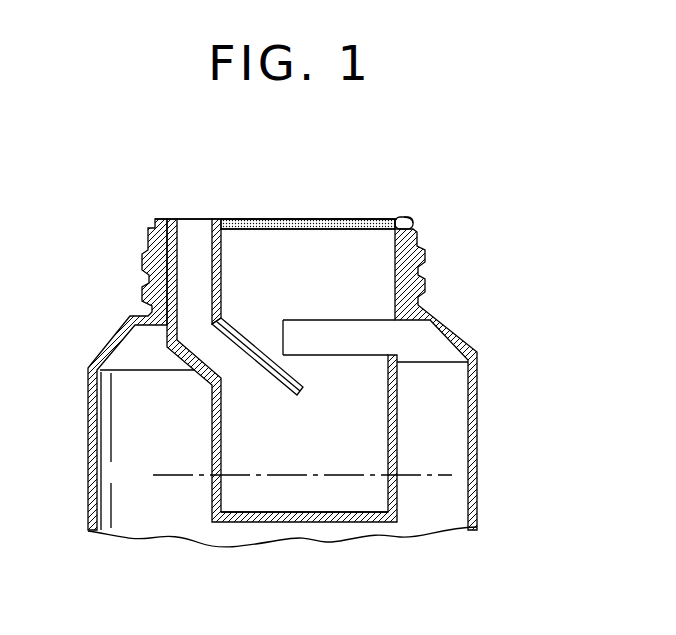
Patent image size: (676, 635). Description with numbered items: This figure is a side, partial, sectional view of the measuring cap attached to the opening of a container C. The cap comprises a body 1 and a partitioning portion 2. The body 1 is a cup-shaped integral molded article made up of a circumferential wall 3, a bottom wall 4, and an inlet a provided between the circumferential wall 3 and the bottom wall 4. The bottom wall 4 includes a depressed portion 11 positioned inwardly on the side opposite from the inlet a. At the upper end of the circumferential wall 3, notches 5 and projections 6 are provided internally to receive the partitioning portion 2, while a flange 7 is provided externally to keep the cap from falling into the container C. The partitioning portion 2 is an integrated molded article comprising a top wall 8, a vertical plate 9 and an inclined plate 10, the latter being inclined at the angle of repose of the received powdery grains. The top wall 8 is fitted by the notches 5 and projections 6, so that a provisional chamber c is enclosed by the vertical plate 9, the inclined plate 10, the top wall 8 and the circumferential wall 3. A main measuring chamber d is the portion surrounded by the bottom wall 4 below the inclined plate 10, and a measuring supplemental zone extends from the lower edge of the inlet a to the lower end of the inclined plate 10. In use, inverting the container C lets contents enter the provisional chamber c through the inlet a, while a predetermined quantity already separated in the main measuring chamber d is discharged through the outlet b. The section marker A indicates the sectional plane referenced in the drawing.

The body 1 is at (142, 222).
The partitioning portion 2 is at (266, 206).
The circumferential wall 3 is at (407, 305).
The bottom wall 4 is at (397, 498).
The notches 5 is at (414, 225).
The projections 6 is at (390, 217).
The flange 7 is at (412, 216).
The top wall 8 is at (332, 217).
The vertical plate 9 is at (223, 295).
The inclined plate 10 is at (268, 372).
The depressed portion 11 is at (188, 396).
The inlet a is at (370, 340).
The outlet b is at (188, 260).
The provisional chamber c is at (258, 268).
The main measuring chamber d is at (313, 497).
The container C is at (478, 455).
The section line A-A' A is at (167, 462).